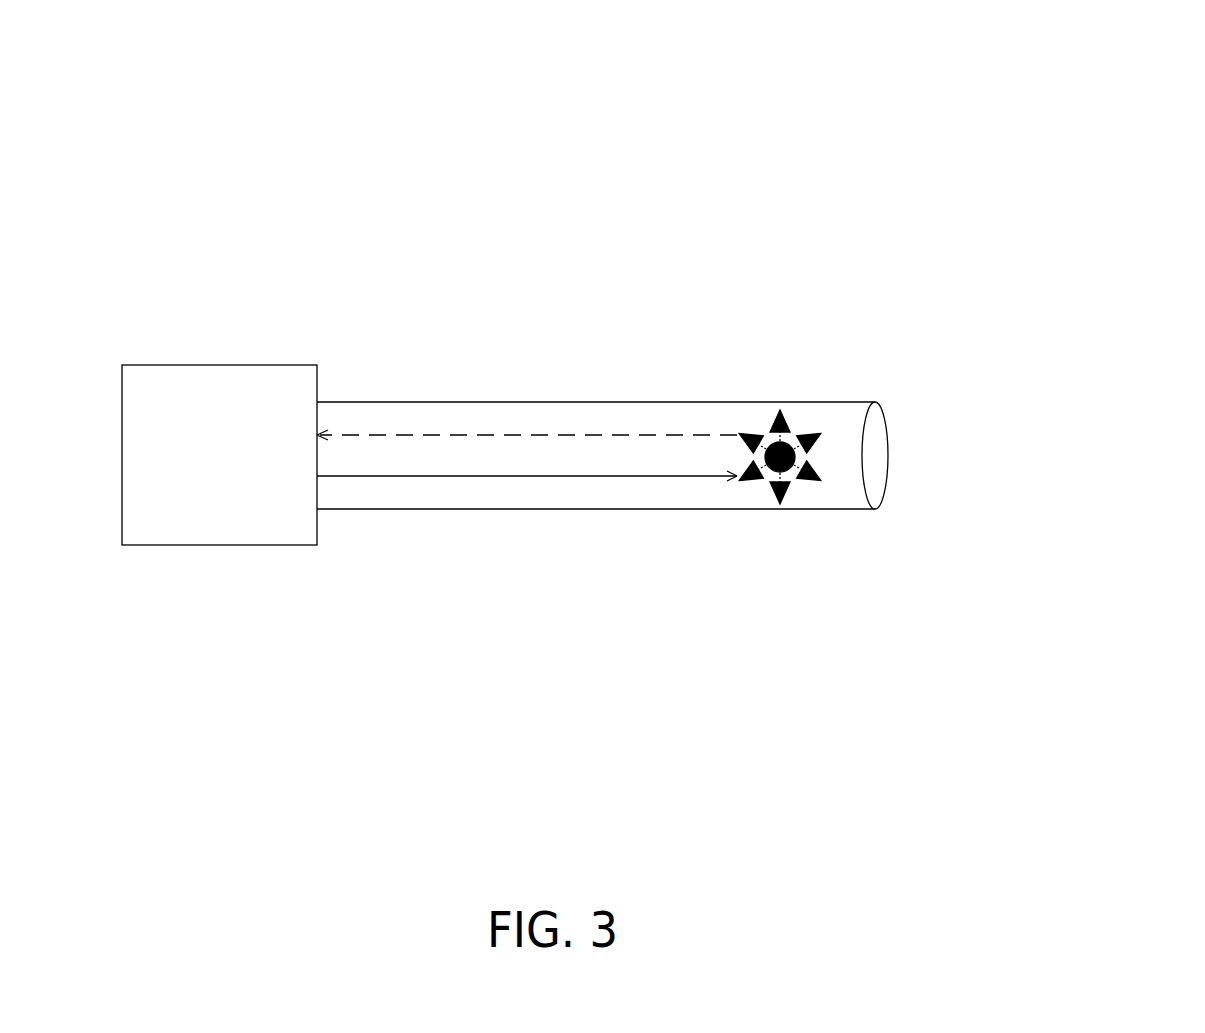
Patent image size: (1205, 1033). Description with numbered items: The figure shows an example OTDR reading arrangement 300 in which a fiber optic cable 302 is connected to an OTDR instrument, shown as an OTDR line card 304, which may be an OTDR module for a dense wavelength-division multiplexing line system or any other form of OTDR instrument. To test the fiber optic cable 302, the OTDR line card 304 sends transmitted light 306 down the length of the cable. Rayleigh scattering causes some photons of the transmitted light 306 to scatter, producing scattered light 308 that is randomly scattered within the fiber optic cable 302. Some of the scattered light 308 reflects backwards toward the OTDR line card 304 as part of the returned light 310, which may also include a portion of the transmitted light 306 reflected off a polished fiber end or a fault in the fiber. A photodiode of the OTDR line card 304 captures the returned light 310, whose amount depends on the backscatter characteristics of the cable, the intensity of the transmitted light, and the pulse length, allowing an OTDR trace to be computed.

The OTDR system 300 is at (1101, 76).
The fiber optic cable 302 is at (833, 510).
The OTDR line card 304 is at (238, 495).
The transmitted light 306 is at (527, 487).
The scattered light 308 is at (825, 398).
The returned light 310 is at (527, 423).